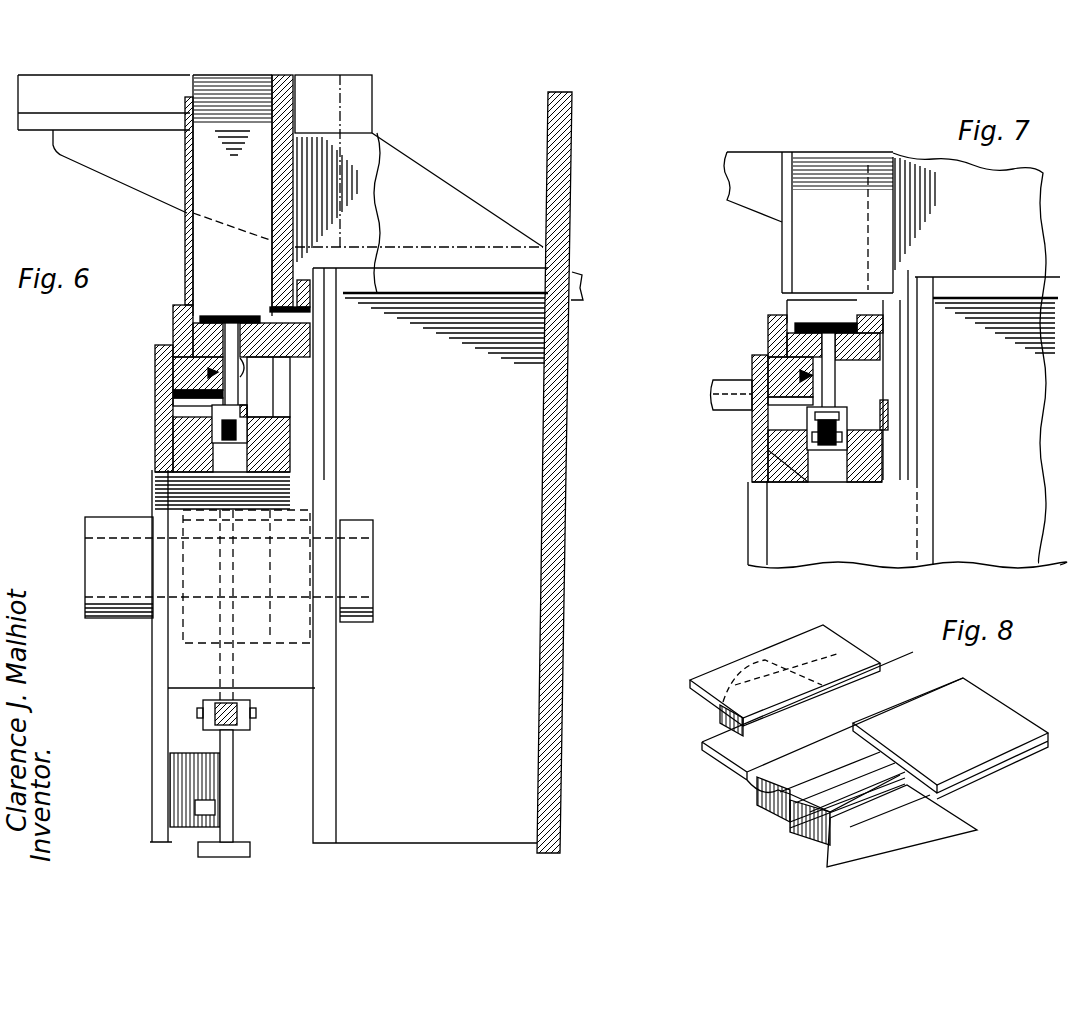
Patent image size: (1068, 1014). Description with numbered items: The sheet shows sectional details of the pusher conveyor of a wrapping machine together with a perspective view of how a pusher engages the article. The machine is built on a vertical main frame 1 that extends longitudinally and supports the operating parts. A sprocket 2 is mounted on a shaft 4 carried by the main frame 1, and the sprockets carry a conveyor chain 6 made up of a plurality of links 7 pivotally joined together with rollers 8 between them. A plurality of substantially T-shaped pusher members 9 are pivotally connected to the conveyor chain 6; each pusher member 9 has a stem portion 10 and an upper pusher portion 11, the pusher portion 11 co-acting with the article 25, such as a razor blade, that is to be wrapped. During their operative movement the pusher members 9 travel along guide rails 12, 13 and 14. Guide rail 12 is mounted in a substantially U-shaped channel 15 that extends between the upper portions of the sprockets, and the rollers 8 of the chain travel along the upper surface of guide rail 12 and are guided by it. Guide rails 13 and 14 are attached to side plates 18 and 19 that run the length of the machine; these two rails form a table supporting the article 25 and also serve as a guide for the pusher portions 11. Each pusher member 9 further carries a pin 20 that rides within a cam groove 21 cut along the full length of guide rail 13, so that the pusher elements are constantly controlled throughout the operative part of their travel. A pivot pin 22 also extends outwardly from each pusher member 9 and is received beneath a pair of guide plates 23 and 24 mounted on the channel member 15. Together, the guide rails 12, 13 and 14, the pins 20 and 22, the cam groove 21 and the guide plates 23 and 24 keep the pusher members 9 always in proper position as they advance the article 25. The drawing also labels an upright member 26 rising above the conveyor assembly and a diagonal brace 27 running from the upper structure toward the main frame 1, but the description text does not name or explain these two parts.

In FIG. 6, the vertical main frame 1 is at (573, 610).
In FIG. 6, the sprocket 2 is at (240, 660).
In FIG. 6, the shaft 4 is at (376, 578).
In FIG. 7, the conveyor chain 6 is at (827, 460).
In FIG. 7, the link 7 is at (842, 425).
In FIG. 7, the roller 8 is at (835, 418).
In FIG. 6, the pusher member 9 is at (236, 790).
In FIG. 8, the pusher member 9 is at (720, 718).
In FIG. 6, the stem portion 10 is at (236, 385).
In FIG. 7, the stem portion 10 is at (836, 392).
In FIG. 8, the stem portion 10 is at (950, 815).
In FIG. 6, the pusher portion 11 is at (230, 316).
In FIG. 7, the pusher portion 11 is at (814, 323).
In FIG. 8, the pusher portion 11 is at (838, 645).
In FIG. 6, the guide rail 12 is at (268, 489).
In FIG. 7, the guide rail 12 is at (810, 470).
In FIG. 6, the guide rail 13 is at (173, 371).
In FIG. 7, the guide rail 13 is at (768, 360).
In FIG. 6, the guide rail 14 is at (300, 341).
In FIG. 7, the guide rail 14 is at (870, 355).
In FIG. 6, the U-shaped channel 15 is at (270, 450).
In FIG. 7, the U-shaped channel 15 is at (765, 482).
In FIG. 6, the side plate 18 is at (160, 400).
In FIG. 7, the side plate 18 is at (755, 475).
In FIG. 6, the side plate 19 is at (320, 383).
In FIG. 7, the side plate 19 is at (912, 428).
In FIG. 6, the pin 20 is at (178, 354).
In FIG. 7, the pin 20 is at (780, 398).
In FIG. 6, the cam groove 21 is at (182, 382).
In FIG. 7, the cam groove 21 is at (800, 372).
In FIG. 6, the pivot pin 22 is at (165, 435).
In FIG. 7, the pivot pin 22 is at (760, 445).
In FIG. 6, the guide plate 23 is at (185, 418).
In FIG. 7, the guide plate 23 is at (782, 410).
In FIG. 6, the guide plate 24 is at (290, 420).
In FIG. 7, the guide plate 24 is at (890, 420).
In FIG. 8, the article 25 is at (995, 713).
In FIG. 6, the column 26 is at (183, 222).
In FIG. 7, the column 26 is at (780, 250).
In FIG. 6, the brace 27 is at (452, 196).